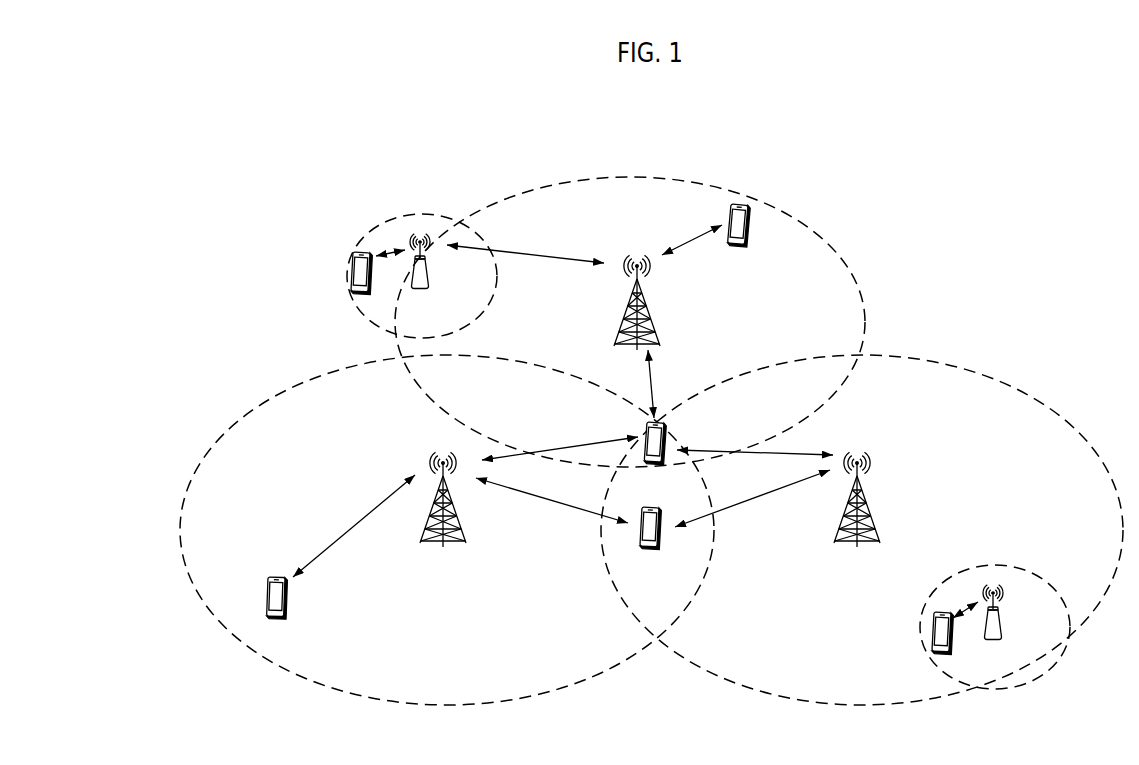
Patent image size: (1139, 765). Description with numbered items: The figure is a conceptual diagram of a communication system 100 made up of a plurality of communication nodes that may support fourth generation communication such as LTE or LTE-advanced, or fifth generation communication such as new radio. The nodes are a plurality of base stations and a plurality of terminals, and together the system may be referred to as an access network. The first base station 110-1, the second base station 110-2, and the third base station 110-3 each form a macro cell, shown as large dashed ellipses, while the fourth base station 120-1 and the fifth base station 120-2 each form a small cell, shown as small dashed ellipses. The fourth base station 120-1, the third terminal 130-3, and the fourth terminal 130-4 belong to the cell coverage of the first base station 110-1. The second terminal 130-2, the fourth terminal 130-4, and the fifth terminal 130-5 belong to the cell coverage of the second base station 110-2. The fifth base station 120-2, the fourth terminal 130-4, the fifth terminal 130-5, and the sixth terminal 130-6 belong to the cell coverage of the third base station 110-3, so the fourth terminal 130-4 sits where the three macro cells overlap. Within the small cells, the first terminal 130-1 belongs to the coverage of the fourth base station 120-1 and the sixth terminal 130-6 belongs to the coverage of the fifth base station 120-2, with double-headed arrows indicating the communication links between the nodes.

The communication system 100 is at (642, 151).
The first base station 110-1 is at (645, 300).
The second base station 110-2 is at (443, 547).
The third base station 110-3 is at (865, 498).
The fourth base station 120-1 is at (427, 272).
The fifth base station 120-2 is at (1000, 615).
The first terminal 130-1 is at (352, 272).
The second terminal 130-2 is at (285, 599).
The third terminal 130-3 is at (748, 227).
The fourth terminal 130-4 is at (667, 427).
The fifth terminal 130-5 is at (650, 513).
The sixth terminal 130-6 is at (933, 630).